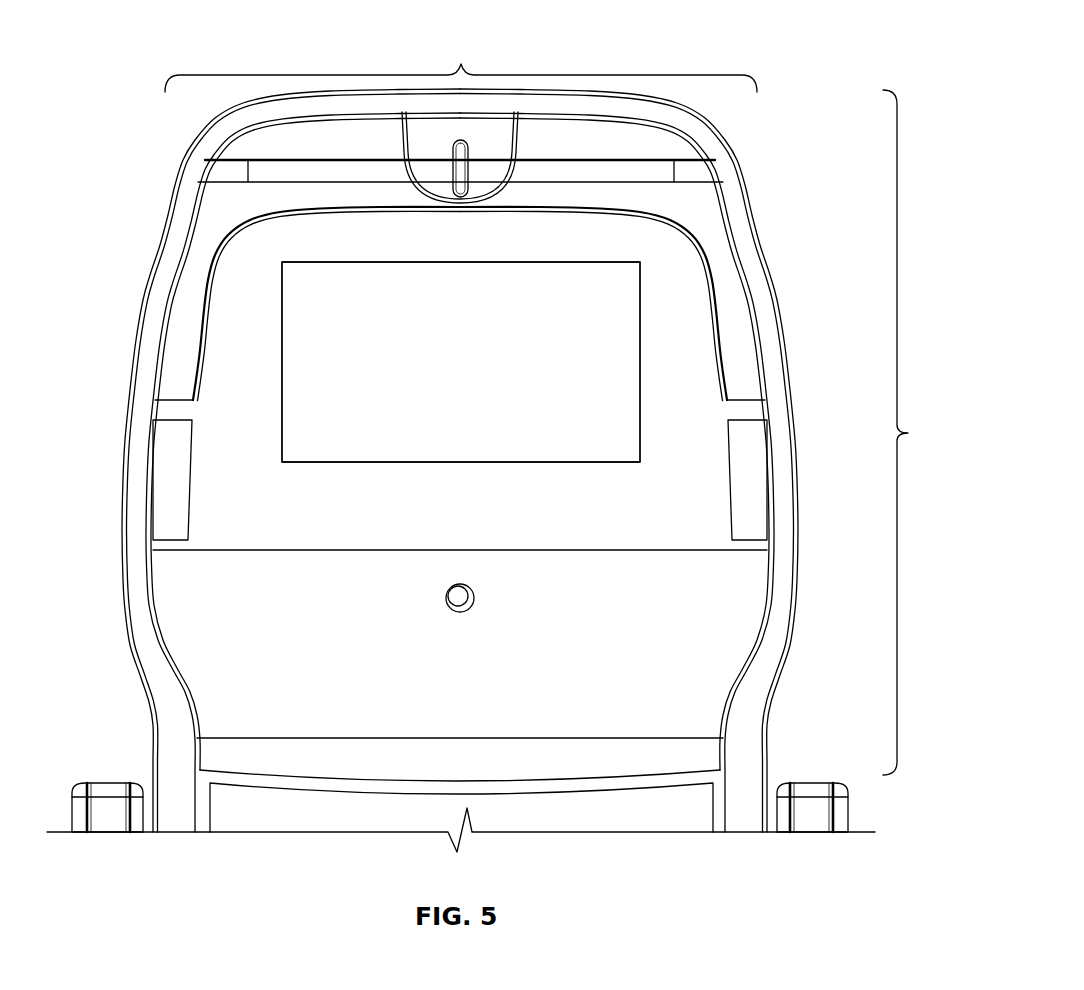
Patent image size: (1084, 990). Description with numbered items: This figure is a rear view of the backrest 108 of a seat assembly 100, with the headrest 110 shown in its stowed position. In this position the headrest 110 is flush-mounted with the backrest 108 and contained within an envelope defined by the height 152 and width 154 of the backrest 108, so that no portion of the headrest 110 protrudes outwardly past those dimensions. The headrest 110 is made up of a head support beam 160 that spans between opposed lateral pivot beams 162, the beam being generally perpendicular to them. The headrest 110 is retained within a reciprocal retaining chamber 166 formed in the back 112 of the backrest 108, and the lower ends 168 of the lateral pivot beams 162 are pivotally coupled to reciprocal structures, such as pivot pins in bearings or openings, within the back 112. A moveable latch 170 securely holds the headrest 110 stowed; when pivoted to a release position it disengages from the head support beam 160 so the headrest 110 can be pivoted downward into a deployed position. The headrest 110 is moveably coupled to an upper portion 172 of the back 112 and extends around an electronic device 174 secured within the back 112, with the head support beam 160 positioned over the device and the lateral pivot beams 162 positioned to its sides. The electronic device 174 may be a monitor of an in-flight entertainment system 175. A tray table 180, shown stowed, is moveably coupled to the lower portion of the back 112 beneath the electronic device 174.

The seat assembly 100 is at (795, 78).
The backrest 108 is at (732, 172).
The headrest 110 is at (197, 263).
The back 112 is at (647, 137).
The height 152 is at (923, 432).
The width 154 is at (461, 118).
The head support beam 160 is at (270, 200).
The lateral pivot beams 162 is at (172, 340).
The retaining chamber 166 is at (708, 167).
The lower ends 168 is at (172, 387).
The latch 170 is at (463, 153).
The upper portion 172 is at (168, 197).
The electronic device 174 is at (598, 322).
The in-flight entertainment (IFE) system 175 is at (614, 352).
The tray table 180 is at (715, 613).